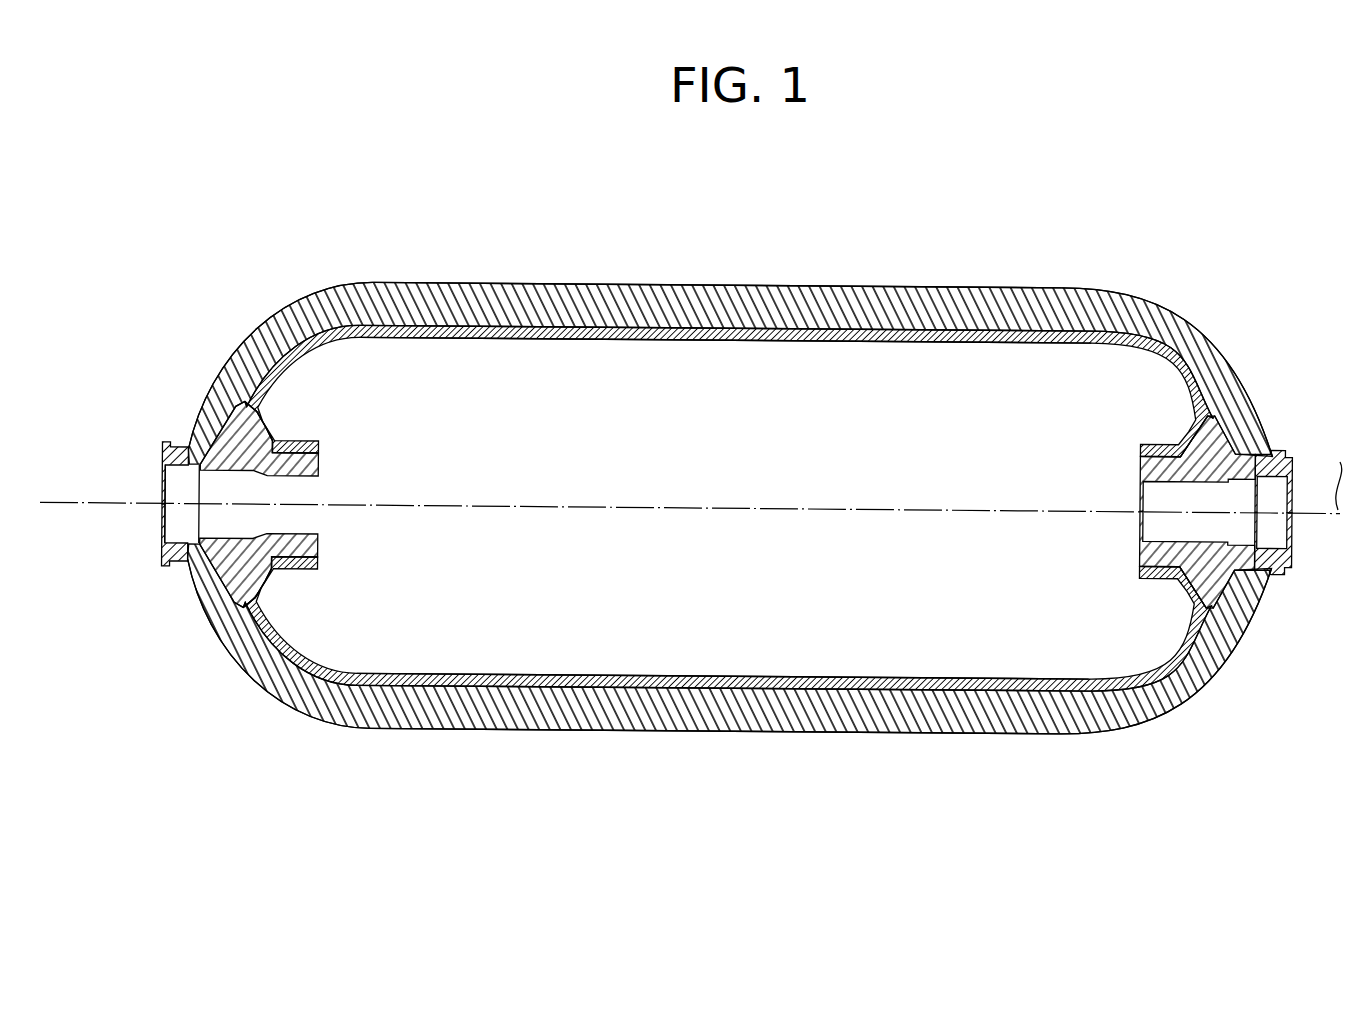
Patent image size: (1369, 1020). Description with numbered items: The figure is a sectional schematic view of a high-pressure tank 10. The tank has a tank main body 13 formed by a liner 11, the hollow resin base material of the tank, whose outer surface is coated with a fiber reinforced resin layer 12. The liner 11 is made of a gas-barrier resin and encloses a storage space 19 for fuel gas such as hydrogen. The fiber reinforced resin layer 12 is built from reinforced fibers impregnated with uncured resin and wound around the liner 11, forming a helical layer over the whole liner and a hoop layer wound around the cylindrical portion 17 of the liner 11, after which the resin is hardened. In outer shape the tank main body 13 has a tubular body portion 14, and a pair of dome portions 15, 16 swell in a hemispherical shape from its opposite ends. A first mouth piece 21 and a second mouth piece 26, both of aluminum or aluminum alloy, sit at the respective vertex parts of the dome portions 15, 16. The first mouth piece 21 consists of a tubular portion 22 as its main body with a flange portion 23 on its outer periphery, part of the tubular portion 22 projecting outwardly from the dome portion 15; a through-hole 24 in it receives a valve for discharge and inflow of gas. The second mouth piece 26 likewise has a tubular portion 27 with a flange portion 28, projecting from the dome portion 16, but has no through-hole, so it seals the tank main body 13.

The high-pressure tank 10 is at (237, 241).
The liner 11 is at (625, 327).
The fiber reinforced resin layer 12 is at (552, 302).
The tank main body 13 is at (655, 231).
The tubular body portion 14 is at (1092, 760).
The dome portion 15 is at (372, 760).
The dome portion 16 is at (1268, 760).
The cylindrical portion 17 is at (757, 342).
The storage space 19 is at (848, 605).
The first mouth piece 21 is at (241, 565).
The tubular portion 22 is at (172, 548).
The flange portion 23 is at (252, 584).
The through-hole 24 is at (196, 540).
The second mouth piece 26 is at (1237, 597).
The tubular portion 27 is at (1275, 566).
The flange portion 28 is at (1208, 600).